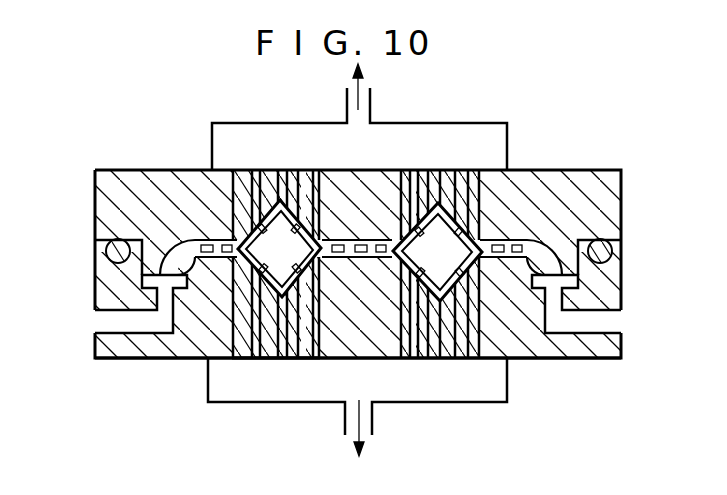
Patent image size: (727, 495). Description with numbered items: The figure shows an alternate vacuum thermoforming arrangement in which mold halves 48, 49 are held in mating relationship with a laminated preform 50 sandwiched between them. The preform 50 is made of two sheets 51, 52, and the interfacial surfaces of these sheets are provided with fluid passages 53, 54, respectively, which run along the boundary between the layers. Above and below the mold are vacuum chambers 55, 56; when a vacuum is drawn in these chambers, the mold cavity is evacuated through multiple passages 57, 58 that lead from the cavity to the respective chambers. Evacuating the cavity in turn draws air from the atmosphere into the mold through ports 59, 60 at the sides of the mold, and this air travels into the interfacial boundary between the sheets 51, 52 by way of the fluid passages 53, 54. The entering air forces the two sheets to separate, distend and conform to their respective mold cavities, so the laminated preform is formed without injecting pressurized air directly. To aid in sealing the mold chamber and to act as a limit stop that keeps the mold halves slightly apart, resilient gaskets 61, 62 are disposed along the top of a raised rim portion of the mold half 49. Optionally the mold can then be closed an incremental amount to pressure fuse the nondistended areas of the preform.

The mold half 48 is at (598, 171).
The mold half 49 is at (548, 359).
The preform 50 is at (534, 242).
The sheet 51 is at (504, 241).
The sheet 52 is at (518, 262).
The fluid passage 53 is at (206, 250).
The fluid passage 54 is at (197, 280).
The vacuum chamber 55 is at (420, 123).
The vacuum chamber 56 is at (432, 403).
The passages 57 is at (302, 170).
The passages 58 is at (268, 359).
The port 59 is at (102, 325).
The port 60 is at (617, 325).
The resilient gasket 61 is at (105, 243).
The resilient gasket 62 is at (612, 243).